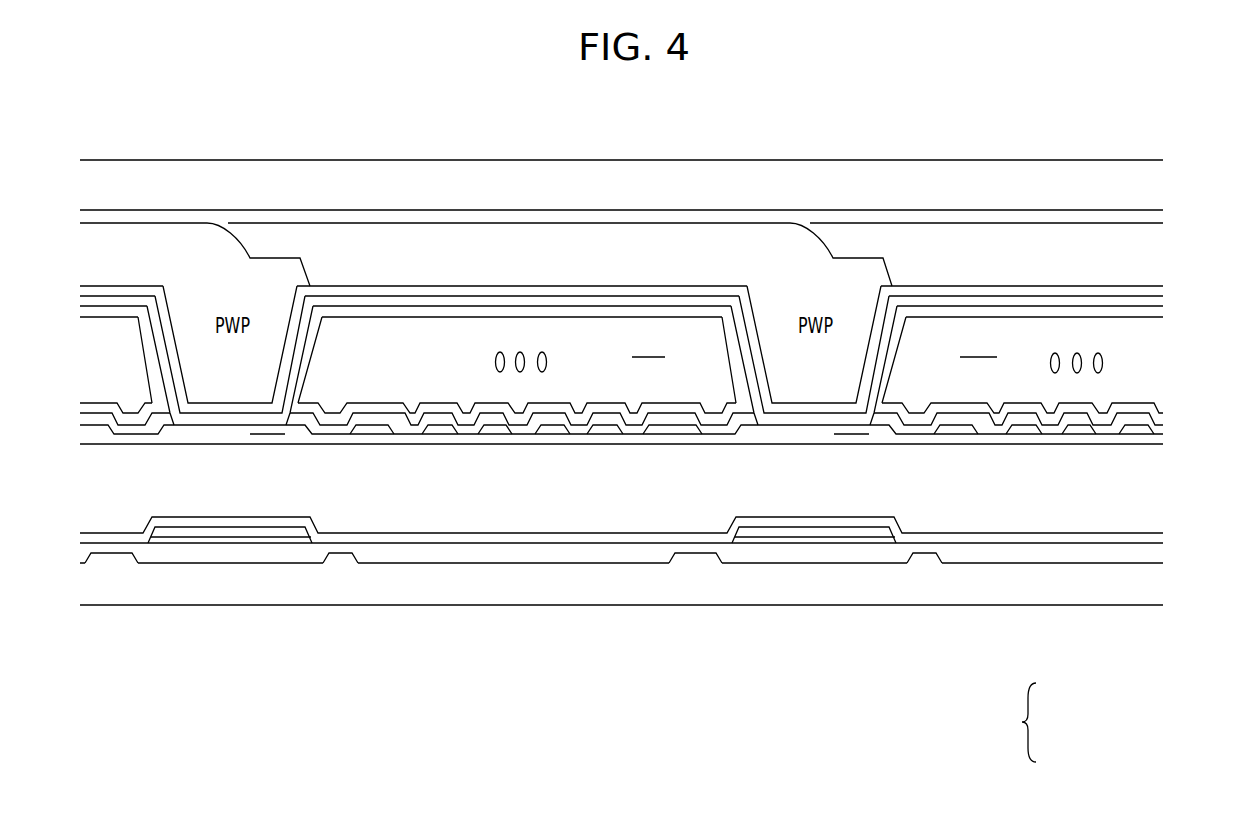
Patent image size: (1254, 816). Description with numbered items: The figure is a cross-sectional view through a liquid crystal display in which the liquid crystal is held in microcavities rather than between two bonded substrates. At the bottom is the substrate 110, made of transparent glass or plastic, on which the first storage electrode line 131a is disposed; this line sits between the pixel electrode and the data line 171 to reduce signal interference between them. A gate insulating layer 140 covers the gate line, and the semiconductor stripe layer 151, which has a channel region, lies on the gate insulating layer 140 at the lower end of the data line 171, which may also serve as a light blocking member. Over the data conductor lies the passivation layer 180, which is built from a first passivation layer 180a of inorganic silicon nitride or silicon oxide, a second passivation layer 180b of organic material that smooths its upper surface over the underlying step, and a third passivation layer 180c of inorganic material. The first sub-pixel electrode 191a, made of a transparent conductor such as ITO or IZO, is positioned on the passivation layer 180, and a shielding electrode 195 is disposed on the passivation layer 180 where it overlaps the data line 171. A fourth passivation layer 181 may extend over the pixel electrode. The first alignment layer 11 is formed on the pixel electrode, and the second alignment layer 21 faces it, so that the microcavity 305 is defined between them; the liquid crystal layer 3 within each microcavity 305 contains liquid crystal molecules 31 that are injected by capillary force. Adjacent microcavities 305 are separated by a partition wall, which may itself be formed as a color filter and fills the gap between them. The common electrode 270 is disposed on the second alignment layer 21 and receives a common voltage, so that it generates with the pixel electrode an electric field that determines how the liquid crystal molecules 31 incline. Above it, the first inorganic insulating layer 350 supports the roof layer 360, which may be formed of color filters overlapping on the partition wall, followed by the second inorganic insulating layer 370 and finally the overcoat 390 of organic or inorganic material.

The overcoat 390 is at (1153, 188).
The second inorganic insulating layer 370 is at (1153, 212).
The roof layer 360 is at (500, 250).
The first inorganic insulating layer 350 is at (1150, 292).
The common electrode 270 is at (1153, 300).
The second alignment layer 21 is at (1155, 313).
The microcavity 305 is at (650, 357).
The liquid crystal molecules 31 is at (1102, 363).
The liquid crystal layer 3 is at (1145, 388).
The first alignment layer 11 is at (1160, 413).
The third passivation layer 180c is at (405, 437).
The first sub-pixel electrode 191a is at (550, 432).
The fourth passivation layer 181 is at (458, 437).
The second passivation layer 180b is at (512, 497).
The data line 171 is at (243, 527).
The semiconductor stripe layer 151 is at (193, 537).
The shielding electrode 195 is at (265, 430).
The first passivation layer 180a is at (657, 540).
The gate insulating layer 140 is at (610, 555).
The first storage electrode line 131a is at (338, 558).
The substrate 110 is at (1135, 590).
The passivation layer 180 is at (1035, 724).